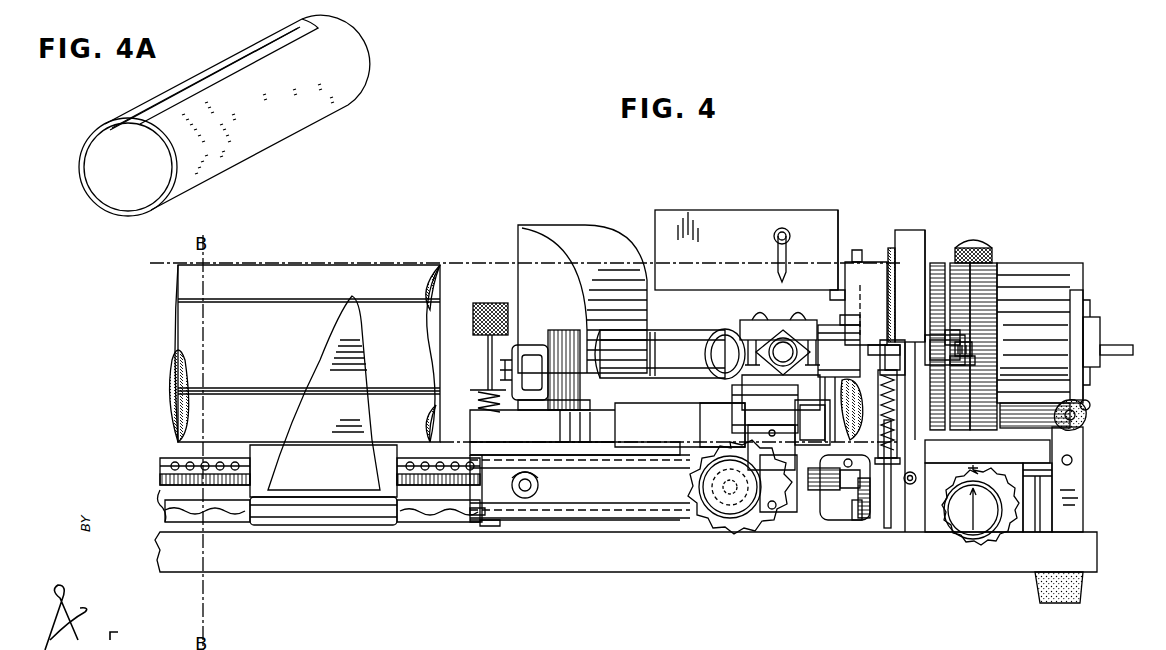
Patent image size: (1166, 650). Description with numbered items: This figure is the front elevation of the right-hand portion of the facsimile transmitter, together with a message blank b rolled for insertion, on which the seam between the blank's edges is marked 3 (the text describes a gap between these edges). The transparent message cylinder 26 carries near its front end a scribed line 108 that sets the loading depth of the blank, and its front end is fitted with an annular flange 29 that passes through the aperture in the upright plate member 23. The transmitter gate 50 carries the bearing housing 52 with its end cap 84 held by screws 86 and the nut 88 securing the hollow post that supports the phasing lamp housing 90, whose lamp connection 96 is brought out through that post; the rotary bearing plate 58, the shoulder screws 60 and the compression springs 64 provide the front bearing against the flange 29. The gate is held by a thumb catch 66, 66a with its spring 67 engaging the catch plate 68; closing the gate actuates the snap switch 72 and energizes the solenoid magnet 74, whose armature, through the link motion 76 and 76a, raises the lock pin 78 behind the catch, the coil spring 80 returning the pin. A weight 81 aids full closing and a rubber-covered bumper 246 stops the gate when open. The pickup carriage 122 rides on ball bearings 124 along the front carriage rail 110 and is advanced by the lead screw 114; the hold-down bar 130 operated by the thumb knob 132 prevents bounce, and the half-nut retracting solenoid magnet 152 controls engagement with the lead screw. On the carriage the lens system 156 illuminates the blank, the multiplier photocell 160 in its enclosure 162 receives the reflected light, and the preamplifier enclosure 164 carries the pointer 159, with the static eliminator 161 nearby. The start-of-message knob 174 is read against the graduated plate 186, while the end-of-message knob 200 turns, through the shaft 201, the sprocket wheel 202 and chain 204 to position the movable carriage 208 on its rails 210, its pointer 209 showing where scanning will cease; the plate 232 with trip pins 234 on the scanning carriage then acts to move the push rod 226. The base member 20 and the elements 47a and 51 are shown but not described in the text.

In FIG. 4A, the slit 3 is at (300, 20).
In FIG. 4A, the message blank b is at (348, 73).
In FIG. 4, the base plate 20 is at (500, 575).
In FIG. 4, the upright end support or plate member 23 is at (912, 235).
In FIG. 4, the message cylinder 26 is at (280, 268).
In FIG. 4, the annular flange 29 is at (890, 262).
In FIG. 4, the knurled knob 47a is at (980, 238).
In FIG. 4, the transmitter gate 50 is at (960, 438).
In FIG. 4, the spring 51 is at (962, 348).
In FIG. 4, the bearing housing 52 is at (1050, 303).
In FIG. 4, the rotary bearing plate 58 is at (938, 268).
In FIG. 4, the shoulder screws 60 is at (928, 285).
In FIG. 4, the compression springs 64 is at (945, 320).
In FIG. 4, the thumb catch 66 is at (940, 338).
In FIG. 4, the thumb catch 66a is at (888, 350).
In FIG. 4, the spring 67 is at (962, 362).
In FIG. 4, the catch plate 68 is at (892, 368).
In FIG. 4, the snap switch 72 is at (860, 350).
In FIG. 4, the solenoid magnet 74 is at (835, 498).
In FIG. 4, the link motion 76 is at (860, 522).
In FIG. 4, the link motion 76a is at (887, 528).
In FIG. 4, the lock pin 78 is at (902, 490).
In FIG. 4, the coil spring 80 is at (890, 425).
In FIG. 4, the weight 81 is at (990, 398).
In FIG. 4, the end cap 84 is at (1075, 350).
In FIG. 4, the screws 86 is at (1092, 407).
In FIG. 4, the nut 88 is at (1092, 335).
In FIG. 4, the phasing lamp housing 90 is at (842, 322).
In FIG. 4, the connection 96 is at (1125, 345).
In FIG. 4, the scribed line 108 is at (862, 275).
In FIG. 4, the front carriage rail 110 is at (160, 505).
In FIG. 4, the lead screw 114 is at (160, 458).
In FIG. 4, the pickup carriage 122 is at (651, 428).
In FIG. 4, the ball bearings 124 is at (512, 488).
In FIG. 4, the hold-down bar 130 is at (495, 528).
In FIG. 4, the thumb knob 132 is at (490, 302).
In FIG. 4, the half-nut retracting solenoid magnet 152 is at (532, 345).
In FIG. 4, the lens system 156 is at (715, 350).
In FIG. 4, the pointer 159 is at (770, 250).
In FIG. 4, the multiplier type photocell 160 is at (786, 340).
In FIG. 4, the static eliminator 161 is at (768, 378).
In FIG. 4, the enclosure 162 is at (828, 295).
In FIG. 4, the enclosure 164 is at (768, 210).
In FIG. 4, the knob 174 is at (1002, 538).
In FIG. 4, the graduated plate 186 is at (1028, 475).
In FIG. 4, the knob 200 is at (718, 528).
In FIG. 4, the shaft 201 is at (750, 458).
In FIG. 4, the sprocket wheel 202 is at (722, 440).
In FIG. 4, the chain 204 is at (268, 438).
In FIG. 4, the movable carriage 208 is at (310, 520).
In FIG. 4, the pointer 209 is at (350, 342).
In FIG. 4, the parallel rails 210 is at (475, 520).
In FIG. 4, the push rod 226 is at (800, 405).
In FIG. 4, the plate 232 is at (785, 512).
In FIG. 4, the trip pins 234 is at (782, 412).
In FIG. 4, the rubber-covered bumper 246 is at (1086, 428).